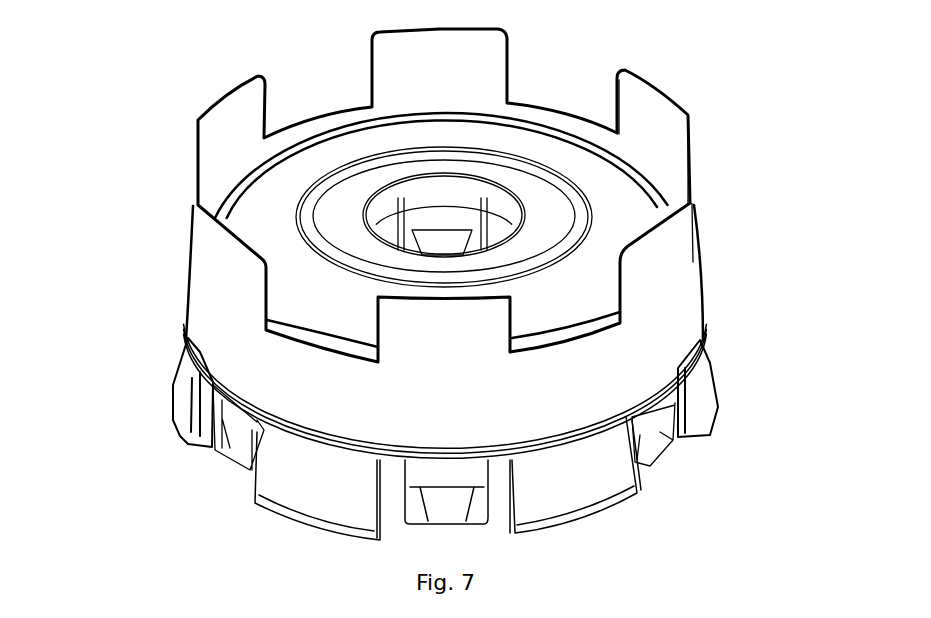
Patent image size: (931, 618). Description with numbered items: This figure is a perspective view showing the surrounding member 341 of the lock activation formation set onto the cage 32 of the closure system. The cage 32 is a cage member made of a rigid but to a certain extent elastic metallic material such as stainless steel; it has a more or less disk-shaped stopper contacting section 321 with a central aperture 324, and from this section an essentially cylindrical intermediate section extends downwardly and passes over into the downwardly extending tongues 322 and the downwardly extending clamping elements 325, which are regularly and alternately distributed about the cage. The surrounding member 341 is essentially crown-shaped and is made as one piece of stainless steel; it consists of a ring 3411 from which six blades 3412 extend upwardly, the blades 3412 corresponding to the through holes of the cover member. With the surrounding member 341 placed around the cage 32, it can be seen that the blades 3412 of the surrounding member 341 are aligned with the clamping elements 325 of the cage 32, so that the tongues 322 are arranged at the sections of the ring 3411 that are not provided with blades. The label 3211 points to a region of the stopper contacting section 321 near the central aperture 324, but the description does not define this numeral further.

The cage 32 is at (470, 110).
The stopper contacting section 321 is at (618, 217).
The inner ring step 3211 is at (340, 205).
The central aperture 324 is at (418, 183).
The surrounding member 341 is at (167, 198).
The ring 3411 is at (687, 313).
The blades 3412 is at (227, 262).
The tongues 322 is at (708, 393).
The clamping elements 325 is at (227, 450).